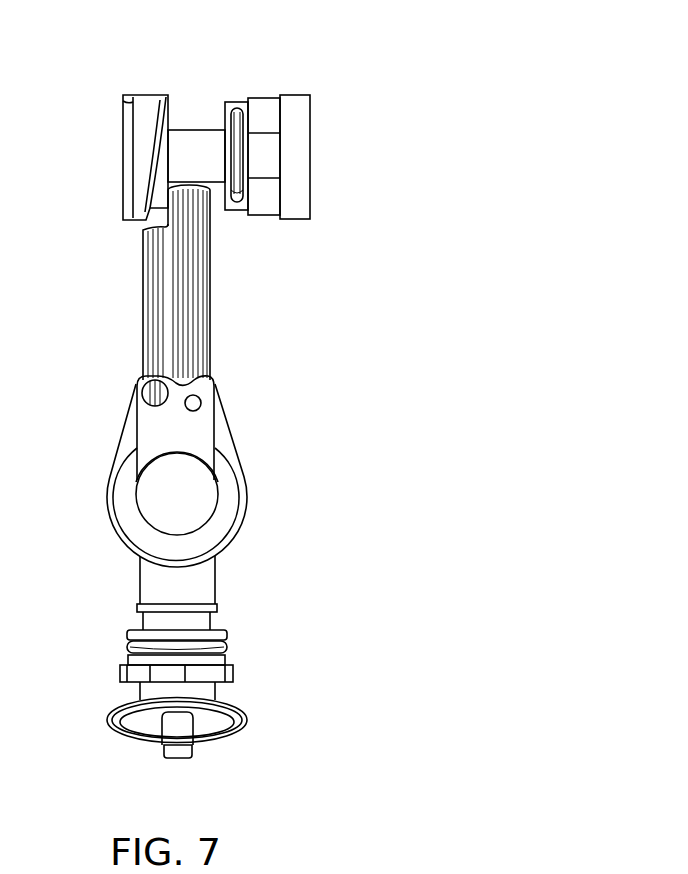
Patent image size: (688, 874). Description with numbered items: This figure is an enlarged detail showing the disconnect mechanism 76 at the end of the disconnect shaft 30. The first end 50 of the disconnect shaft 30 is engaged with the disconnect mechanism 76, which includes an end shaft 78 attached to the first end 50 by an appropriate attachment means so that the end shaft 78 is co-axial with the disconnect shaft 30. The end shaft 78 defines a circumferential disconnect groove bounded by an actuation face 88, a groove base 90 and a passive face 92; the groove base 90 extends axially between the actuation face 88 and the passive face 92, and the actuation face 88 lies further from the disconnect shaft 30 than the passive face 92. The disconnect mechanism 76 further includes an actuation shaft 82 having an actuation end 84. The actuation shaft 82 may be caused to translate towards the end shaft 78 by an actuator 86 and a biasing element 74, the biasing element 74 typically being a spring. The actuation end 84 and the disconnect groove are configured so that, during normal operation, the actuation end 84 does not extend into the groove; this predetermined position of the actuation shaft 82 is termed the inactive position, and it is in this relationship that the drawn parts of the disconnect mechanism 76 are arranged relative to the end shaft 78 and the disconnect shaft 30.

The disconnect shaft 30 is at (330, 149).
The first end 50 is at (287, 95).
The biasing element 74 is at (200, 578).
The disconnect mechanism 76 is at (278, 442).
The end shaft 78 is at (140, 182).
The actuation shaft 82 is at (190, 337).
The actuation end 84 is at (193, 215).
The actuator 86 is at (173, 478).
The actuation face 88 is at (168, 98).
The groove base 90 is at (190, 130).
The passive face 92 is at (211, 117).